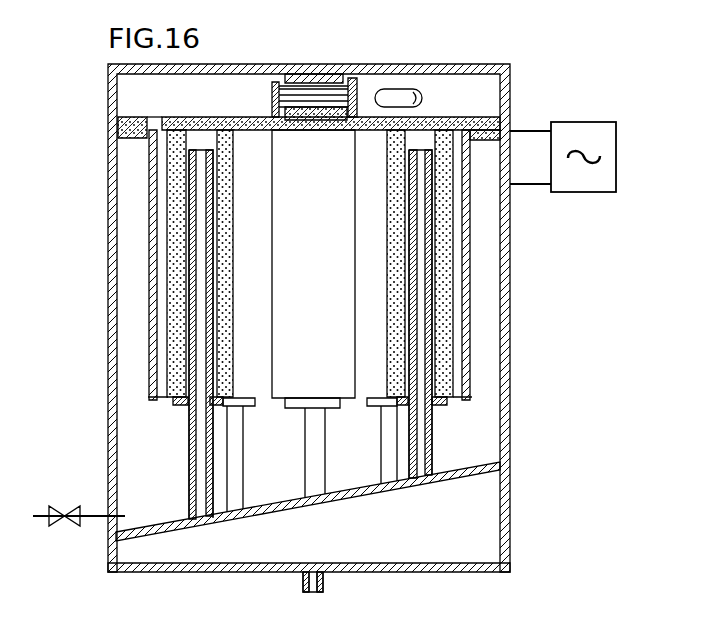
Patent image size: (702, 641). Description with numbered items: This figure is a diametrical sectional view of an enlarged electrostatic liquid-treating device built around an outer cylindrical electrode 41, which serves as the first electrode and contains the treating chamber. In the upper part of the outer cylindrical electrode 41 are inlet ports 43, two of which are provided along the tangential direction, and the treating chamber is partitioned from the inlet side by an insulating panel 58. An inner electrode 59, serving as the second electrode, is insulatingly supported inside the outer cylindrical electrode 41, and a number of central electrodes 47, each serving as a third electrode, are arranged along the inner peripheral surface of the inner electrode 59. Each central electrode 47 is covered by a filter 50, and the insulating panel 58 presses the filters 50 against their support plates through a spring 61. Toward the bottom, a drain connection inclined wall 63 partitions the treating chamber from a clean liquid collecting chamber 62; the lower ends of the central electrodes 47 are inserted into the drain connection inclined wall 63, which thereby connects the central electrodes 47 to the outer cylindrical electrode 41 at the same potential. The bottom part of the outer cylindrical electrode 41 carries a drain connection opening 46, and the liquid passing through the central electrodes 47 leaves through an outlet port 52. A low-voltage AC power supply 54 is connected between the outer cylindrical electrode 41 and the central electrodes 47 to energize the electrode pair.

The outer cylindrical electrode 41 is at (508, 352).
The inlet port 43 is at (415, 91).
The drain connection opening 46 is at (93, 517).
The central electrode 47 is at (428, 440).
The filter 50 is at (447, 280).
The outlet port 52 is at (313, 578).
The low-voltage AC power supply 54 is at (585, 122).
The insulating panel 58 is at (253, 117).
The inner electrode 59 is at (470, 248).
The spring 61 is at (364, 77).
The clean liquid collecting chamber 62 is at (487, 523).
The drain connection inclined wall 63 is at (279, 505).